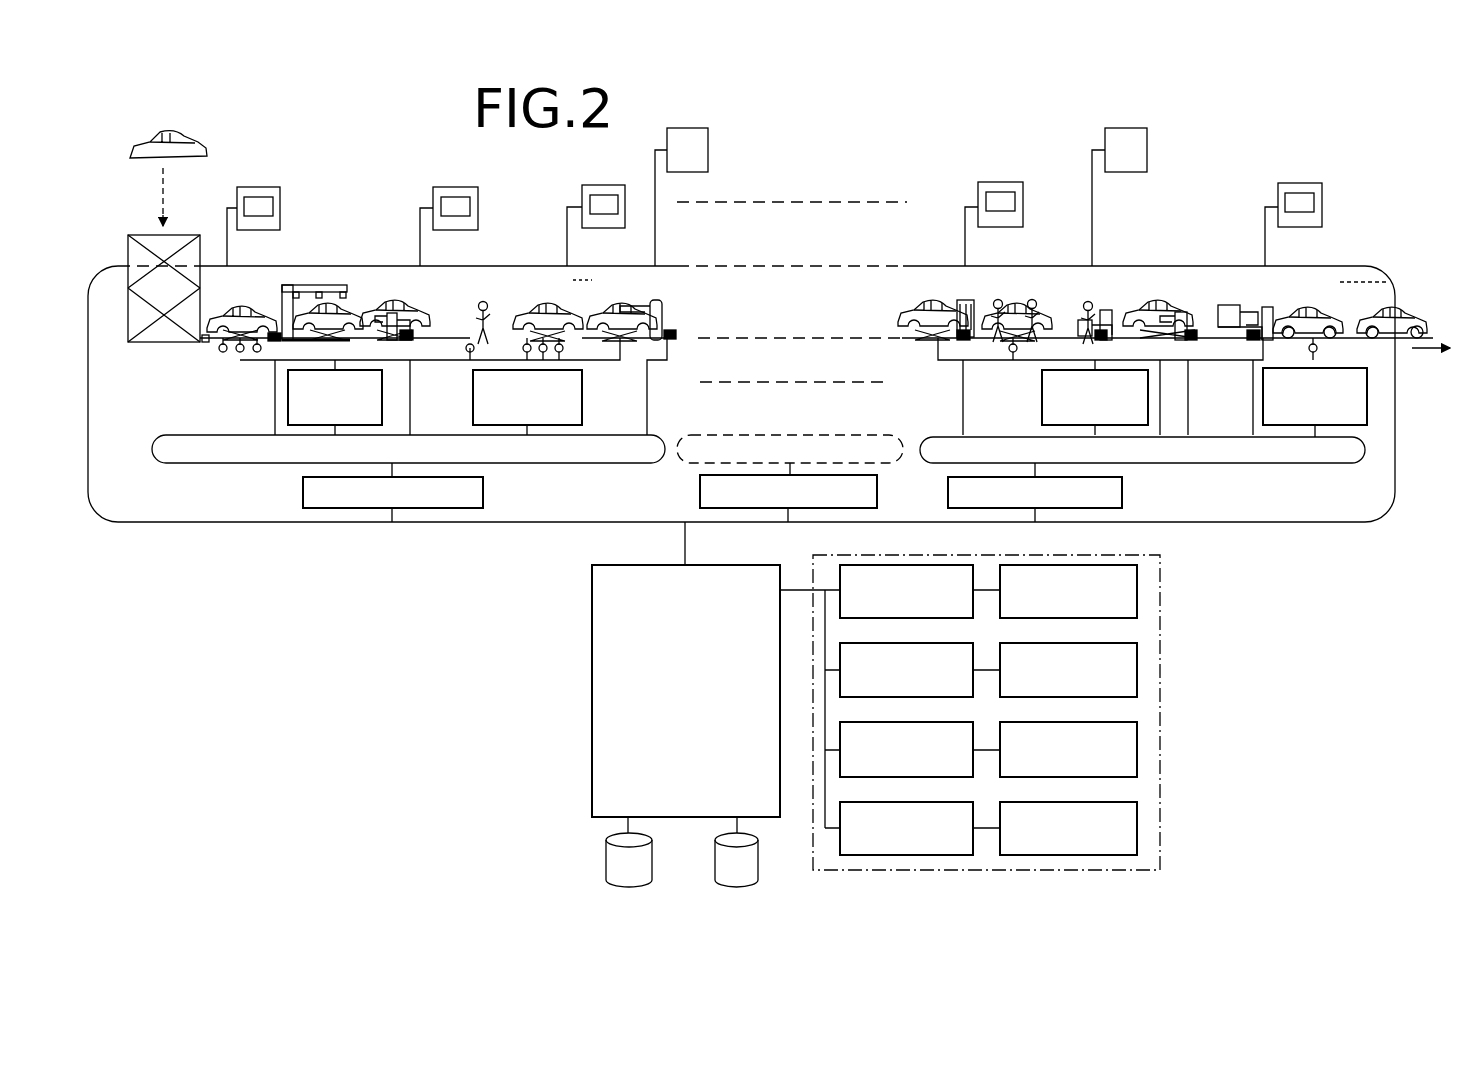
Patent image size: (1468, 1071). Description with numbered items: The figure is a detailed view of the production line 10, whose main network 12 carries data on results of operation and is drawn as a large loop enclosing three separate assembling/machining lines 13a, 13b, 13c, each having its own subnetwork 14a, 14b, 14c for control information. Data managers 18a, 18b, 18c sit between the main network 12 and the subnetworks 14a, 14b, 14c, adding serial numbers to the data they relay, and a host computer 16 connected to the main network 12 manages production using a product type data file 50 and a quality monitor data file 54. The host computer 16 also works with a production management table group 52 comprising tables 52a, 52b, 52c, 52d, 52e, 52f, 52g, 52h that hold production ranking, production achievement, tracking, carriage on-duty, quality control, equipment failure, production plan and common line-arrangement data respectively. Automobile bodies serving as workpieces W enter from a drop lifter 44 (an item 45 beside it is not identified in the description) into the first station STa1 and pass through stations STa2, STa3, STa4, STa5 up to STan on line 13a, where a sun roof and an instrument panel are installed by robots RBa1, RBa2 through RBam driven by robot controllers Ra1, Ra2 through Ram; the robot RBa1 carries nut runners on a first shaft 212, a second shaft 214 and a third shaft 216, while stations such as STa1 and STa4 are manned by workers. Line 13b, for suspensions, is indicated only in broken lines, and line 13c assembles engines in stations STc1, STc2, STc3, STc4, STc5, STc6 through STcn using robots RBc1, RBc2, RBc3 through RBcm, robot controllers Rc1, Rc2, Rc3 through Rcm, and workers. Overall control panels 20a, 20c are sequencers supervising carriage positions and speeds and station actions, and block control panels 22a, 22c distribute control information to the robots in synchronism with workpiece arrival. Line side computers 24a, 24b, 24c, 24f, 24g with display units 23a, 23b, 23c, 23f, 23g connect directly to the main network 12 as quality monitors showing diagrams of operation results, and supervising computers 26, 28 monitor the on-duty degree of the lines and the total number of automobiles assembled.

The production line 10 is at (872, 168).
The main network 12 is at (505, 266).
The assembling/machining line 13a is at (382, 180).
The assembling/machining line 13b is at (790, 202).
The assembling/machining line 13c is at (1232, 180).
The subnetwork 14a is at (247, 463).
The subnetwork 14b is at (778, 435).
The subnetwork 14c is at (1300, 463).
The host computer 16 is at (592, 598).
The data manager 18a is at (483, 492).
The data manager 18b is at (700, 492).
The data manager 18c is at (1122, 492).
The overall control panel 20a is at (582, 400).
The overall control panel 20c is at (1367, 400).
The block control panel 22a is at (288, 408).
The block control panel 22c is at (1042, 408).
The display unit 23a is at (274, 205).
The display unit 23b is at (472, 205).
The display unit 23c is at (606, 196).
The display unit 23f is at (1003, 192).
The display unit 23g is at (1300, 193).
The line side computer 24a is at (258, 187).
The line side computer 24b is at (452, 187).
The line side computer 24c is at (593, 185).
The line side computer 24f is at (990, 182).
The line side computer 24g is at (1322, 200).
The supervising computer 26 is at (708, 160).
The supervising computer 28 is at (1147, 150).
The drop lifter 44 is at (126, 245).
The sensor 45 is at (201, 345).
The product type data file 50 is at (652, 860).
The quality monitor data file 54 is at (758, 868).
The production management table group 52 is at (1160, 678).
The production management table 52a is at (866, 565).
The production management table 52b is at (1045, 565).
The production management table 52c is at (948, 643).
The production management table 52d is at (1137, 650).
The management table 52e is at (952, 722).
The production management table 52f is at (1137, 735).
The production management table 52g is at (945, 802).
The production management table 52h is at (1137, 815).
The first shaft 212 is at (344, 292).
The second shaft 214 is at (320, 292).
The third shaft 216 is at (296, 292).
The workpiece W is at (207, 144).
The assembling/machining station STa1 is at (228, 304).
The assembling/machining station STa2 is at (365, 280).
The assembling/machining station STa3 is at (382, 304).
The assembling/machining station STa4 is at (474, 304).
The assembling/machining station STa5 is at (532, 304).
The assembling/machining station STan is at (607, 304).
The assembling/machining station STc1 is at (895, 308).
The assembling/machining station STc2 is at (1013, 303).
The assembling/machining station STc3 is at (1078, 303).
The assembling/machining station STc4 is at (1142, 304).
The assembling/machining station STc5 is at (1228, 304).
The assembling/machining station STc6 is at (1305, 304).
The assembling/machining station STcn is at (1401, 304).
The robot RBa1 is at (284, 292).
The robot RBa2 is at (398, 313).
The robot RBam is at (665, 316).
The robot RBc1 is at (962, 300).
The robot RBc2 is at (1106, 310).
The robot RBc3 is at (1181, 312).
The robot RBcm is at (1268, 307).
The robot controller Ra1 is at (268, 342).
The robot controller Ra2 is at (408, 341).
The robot controller Ram is at (677, 335).
The robot controller Rc1 is at (960, 341).
The robot controller Rc2 is at (1095, 340).
The robot controller Rc3 is at (1191, 341).
The robot controller Rcm is at (1252, 341).